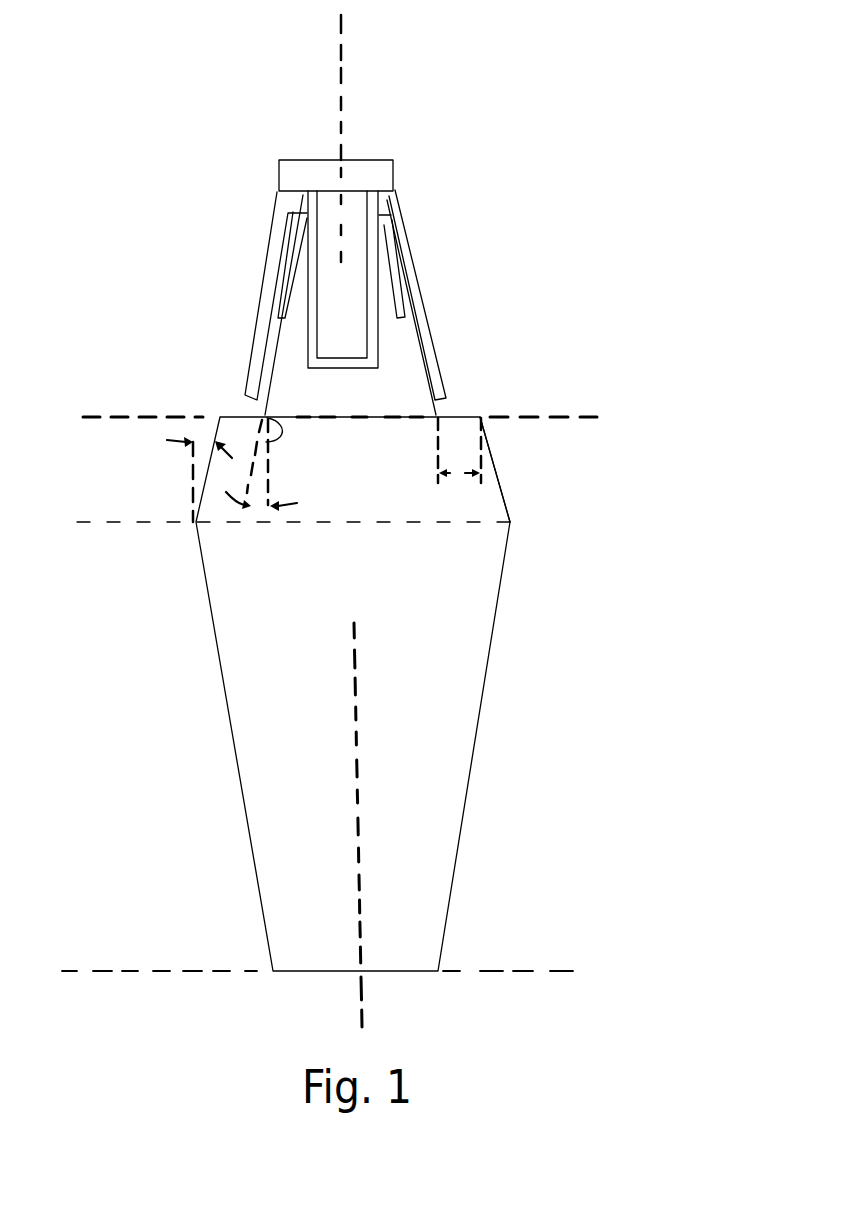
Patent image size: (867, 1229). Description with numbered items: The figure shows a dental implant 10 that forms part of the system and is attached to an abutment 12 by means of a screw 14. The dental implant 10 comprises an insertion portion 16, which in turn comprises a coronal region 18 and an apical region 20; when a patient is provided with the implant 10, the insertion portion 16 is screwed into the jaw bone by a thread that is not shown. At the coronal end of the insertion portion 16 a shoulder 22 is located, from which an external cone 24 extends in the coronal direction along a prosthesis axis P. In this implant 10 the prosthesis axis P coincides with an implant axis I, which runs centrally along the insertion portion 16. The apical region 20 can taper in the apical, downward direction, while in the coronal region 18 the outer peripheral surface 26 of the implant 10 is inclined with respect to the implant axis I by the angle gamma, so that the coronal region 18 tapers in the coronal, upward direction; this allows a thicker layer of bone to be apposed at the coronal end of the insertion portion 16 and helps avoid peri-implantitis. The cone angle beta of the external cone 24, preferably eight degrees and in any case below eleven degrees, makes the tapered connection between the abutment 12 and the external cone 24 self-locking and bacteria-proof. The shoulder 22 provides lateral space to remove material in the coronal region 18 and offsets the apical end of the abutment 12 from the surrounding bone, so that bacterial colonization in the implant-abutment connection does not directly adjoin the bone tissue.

The dental implant 10 is at (624, 352).
The abutment 12 is at (428, 337).
The screw 14 is at (380, 172).
The insertion portion 16 is at (562, 963).
The coronal region 18 is at (98, 417).
The apical region 20 is at (88, 971).
The shoulder 22 is at (240, 413).
The external cone 24 is at (395, 373).
The outer peripheral surface 26 is at (400, 307).
The prosthesis axis P is at (356, 134).
The implant axis I is at (366, 825).